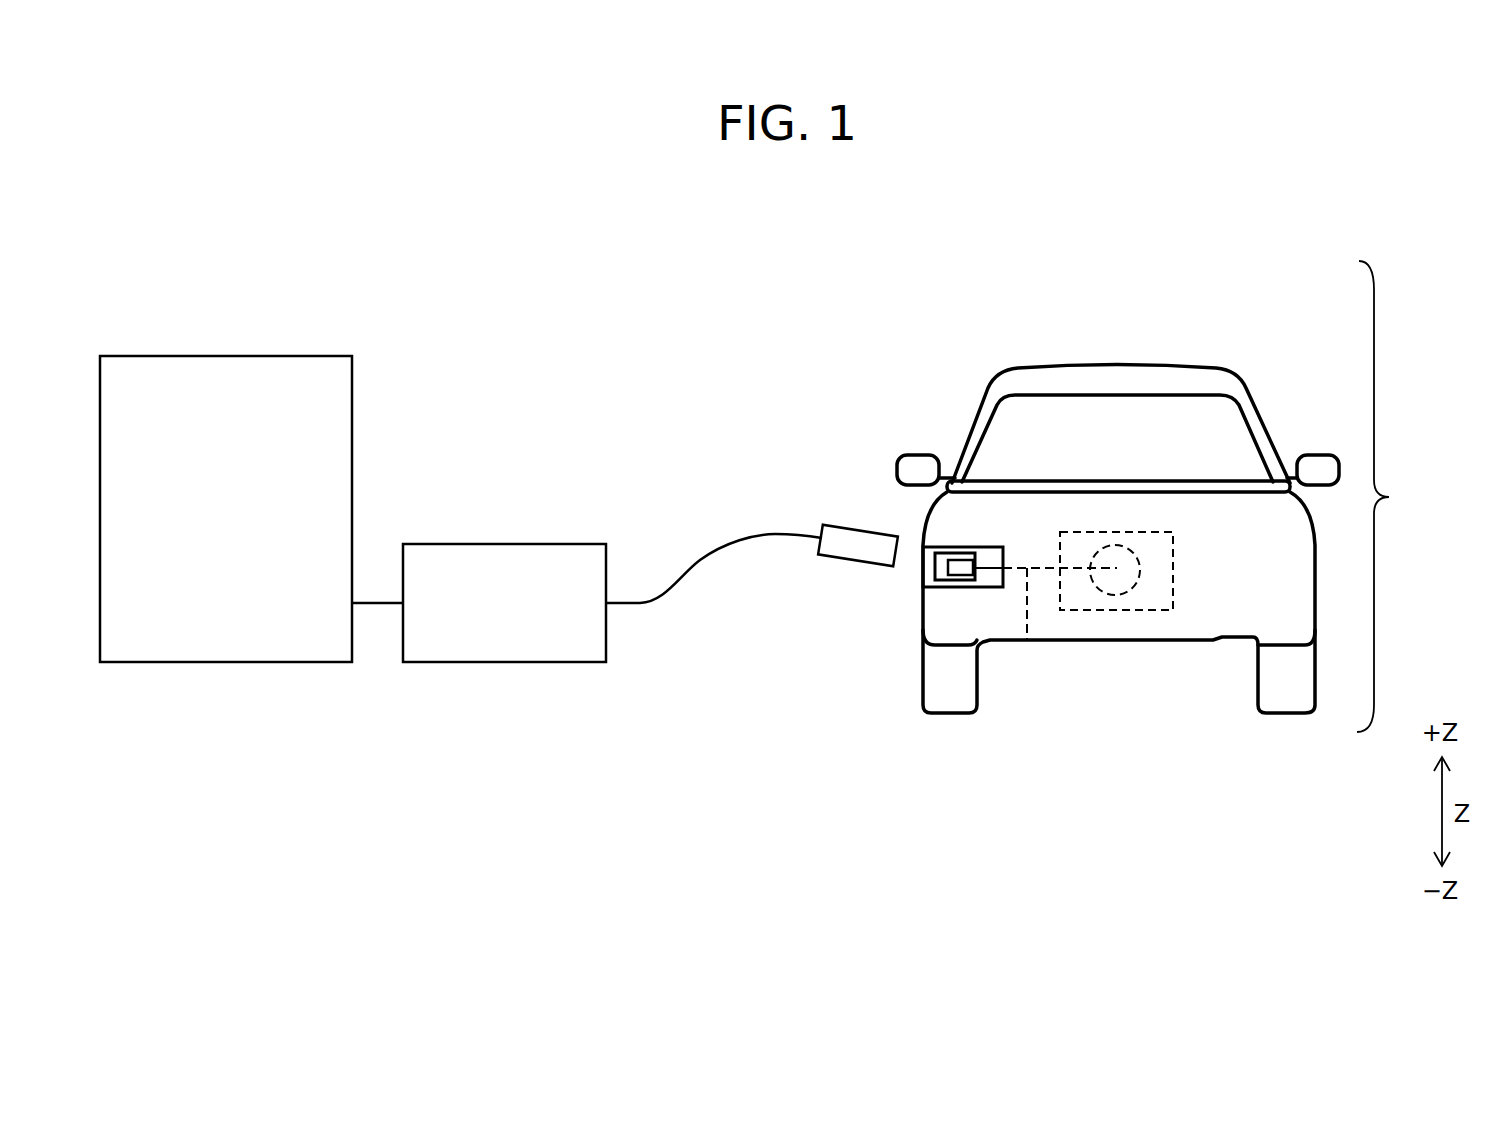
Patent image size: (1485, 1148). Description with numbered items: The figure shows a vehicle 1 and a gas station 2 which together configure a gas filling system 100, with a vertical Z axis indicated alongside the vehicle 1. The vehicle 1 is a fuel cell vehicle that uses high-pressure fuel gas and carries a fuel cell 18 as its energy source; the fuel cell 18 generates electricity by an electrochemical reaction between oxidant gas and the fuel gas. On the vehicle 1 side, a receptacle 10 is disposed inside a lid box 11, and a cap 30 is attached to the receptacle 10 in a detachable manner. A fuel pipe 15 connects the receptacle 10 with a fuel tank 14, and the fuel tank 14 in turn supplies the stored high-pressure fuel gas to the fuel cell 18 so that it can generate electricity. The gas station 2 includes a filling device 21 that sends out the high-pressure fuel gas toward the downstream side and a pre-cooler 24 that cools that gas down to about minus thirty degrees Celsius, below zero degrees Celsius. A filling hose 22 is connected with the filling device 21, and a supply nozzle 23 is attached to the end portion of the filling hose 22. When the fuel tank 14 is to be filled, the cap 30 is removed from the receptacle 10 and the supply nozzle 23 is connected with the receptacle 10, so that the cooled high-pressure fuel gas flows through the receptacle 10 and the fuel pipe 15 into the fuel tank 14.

The vehicle 1 is at (1115, 365).
The gas station 2 is at (416, 432).
The receptacle 10 is at (987, 547).
The lid box 11 is at (928, 567).
The fuel tank 14 is at (1128, 578).
The fuel pipe 15 is at (1027, 640).
The fuel cell 18 is at (1087, 612).
The filling device 21 is at (234, 356).
The filling hose 22 is at (712, 558).
The supply nozzle 23 is at (838, 525).
The pre-cooler 24 is at (503, 544).
The cap 30 is at (936, 581).
The gas filling system 100 is at (1400, 496).